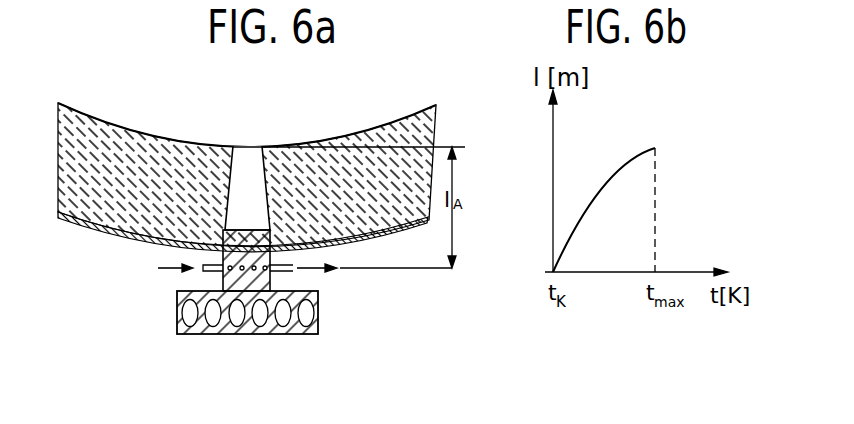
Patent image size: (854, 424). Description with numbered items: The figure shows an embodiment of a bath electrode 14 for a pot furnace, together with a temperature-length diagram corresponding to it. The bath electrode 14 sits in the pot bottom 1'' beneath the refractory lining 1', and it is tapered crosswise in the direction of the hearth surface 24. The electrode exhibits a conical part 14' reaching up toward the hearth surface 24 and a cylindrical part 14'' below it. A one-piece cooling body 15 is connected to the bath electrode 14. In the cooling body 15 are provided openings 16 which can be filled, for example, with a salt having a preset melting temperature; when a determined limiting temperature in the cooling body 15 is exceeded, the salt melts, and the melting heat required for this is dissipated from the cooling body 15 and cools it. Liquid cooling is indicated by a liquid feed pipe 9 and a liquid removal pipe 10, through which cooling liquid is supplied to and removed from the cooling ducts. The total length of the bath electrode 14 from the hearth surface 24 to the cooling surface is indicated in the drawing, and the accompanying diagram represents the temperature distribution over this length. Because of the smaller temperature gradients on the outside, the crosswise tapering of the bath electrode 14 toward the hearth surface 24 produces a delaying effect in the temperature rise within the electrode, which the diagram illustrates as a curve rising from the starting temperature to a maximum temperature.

The refractory lining 1' is at (247, 159).
The pot bottom 1'' is at (243, 247).
The hearth surface 24 is at (167, 132).
The bath electrode 14 is at (253, 151).
The conical part 14' is at (307, 151).
The cylindrical part 14'' is at (196, 281).
The liquid feed pipe 9 is at (200, 273).
The liquid removal pipe 10 is at (361, 287).
The cooling body 15 is at (198, 330).
The openings 16 is at (235, 320).